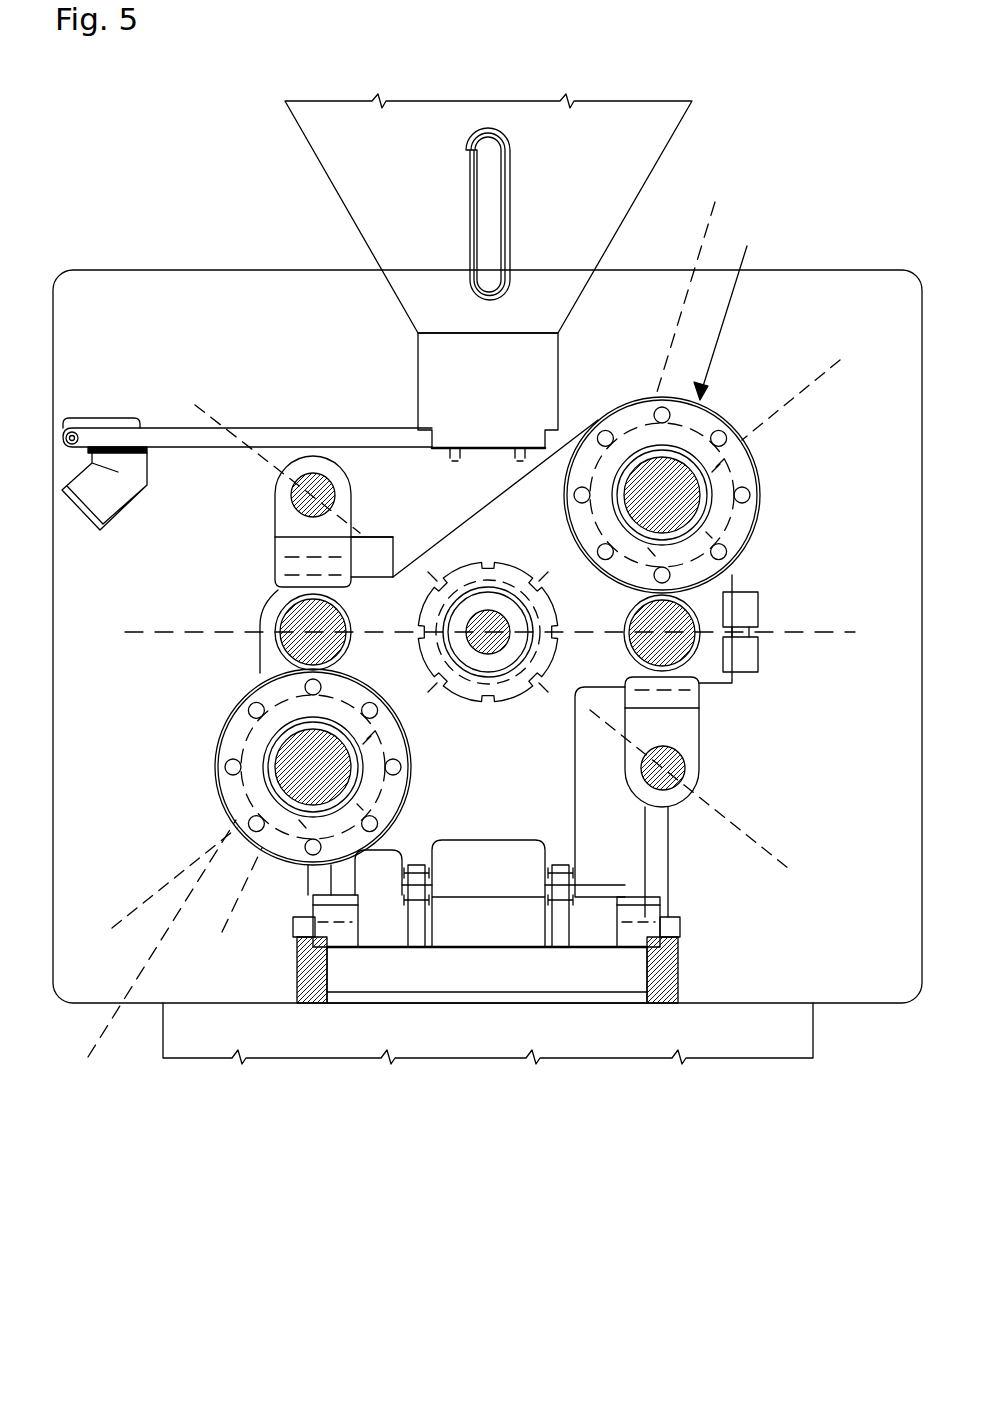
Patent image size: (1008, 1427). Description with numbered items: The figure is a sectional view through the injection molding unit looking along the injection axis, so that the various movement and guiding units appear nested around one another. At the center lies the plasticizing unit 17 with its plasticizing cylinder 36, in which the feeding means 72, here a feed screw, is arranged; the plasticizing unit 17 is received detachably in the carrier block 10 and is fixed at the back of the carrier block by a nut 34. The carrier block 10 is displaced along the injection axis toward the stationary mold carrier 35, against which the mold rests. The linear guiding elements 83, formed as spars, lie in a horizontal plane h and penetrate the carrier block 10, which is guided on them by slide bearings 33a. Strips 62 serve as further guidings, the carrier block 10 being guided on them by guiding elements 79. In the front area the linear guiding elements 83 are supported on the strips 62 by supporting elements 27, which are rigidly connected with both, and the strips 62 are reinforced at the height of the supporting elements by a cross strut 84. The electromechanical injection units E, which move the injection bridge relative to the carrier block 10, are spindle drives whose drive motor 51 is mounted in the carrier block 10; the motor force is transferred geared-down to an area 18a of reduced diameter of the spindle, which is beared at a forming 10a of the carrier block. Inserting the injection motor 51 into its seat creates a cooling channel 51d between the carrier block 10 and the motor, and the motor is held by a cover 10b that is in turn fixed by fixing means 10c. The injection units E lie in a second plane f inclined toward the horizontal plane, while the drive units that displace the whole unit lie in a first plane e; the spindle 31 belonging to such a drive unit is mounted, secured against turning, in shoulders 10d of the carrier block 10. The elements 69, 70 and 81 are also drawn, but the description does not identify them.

The carrier block 10 is at (482, 478).
The forming of the carrier block 10a is at (757, 538).
The cover 10b is at (740, 466).
The fixing means 10c is at (748, 492).
The shoulders of the carrier block 10d is at (290, 520).
The plasticizing unit 17 is at (275, 537).
The area with reduced diameter 18a is at (672, 458).
The supporting elements 27 is at (648, 868).
The spindle 31 is at (317, 487).
The slide bearings 33a is at (282, 655).
The nut 34 is at (463, 688).
The stationary mold carrier 35 is at (172, 350).
The plasticizing cylinder 36 is at (497, 603).
The drive motor 51 is at (401, 632).
The cooling channel 51d is at (231, 904).
The strips 62 is at (663, 975).
The sensor 69 is at (748, 650).
The sensor 70 is at (745, 608).
The feeding means 72 is at (430, 533).
The guiding elements 79 is at (400, 925).
The base plate 81 is at (773, 1032).
The linear guiding elements 83 is at (300, 622).
The cross strut 84 is at (610, 968).
The injection units E is at (726, 310).
The first plane e is at (489, 634).
The second plane f is at (480, 641).
The horizontal plane h is at (485, 632).